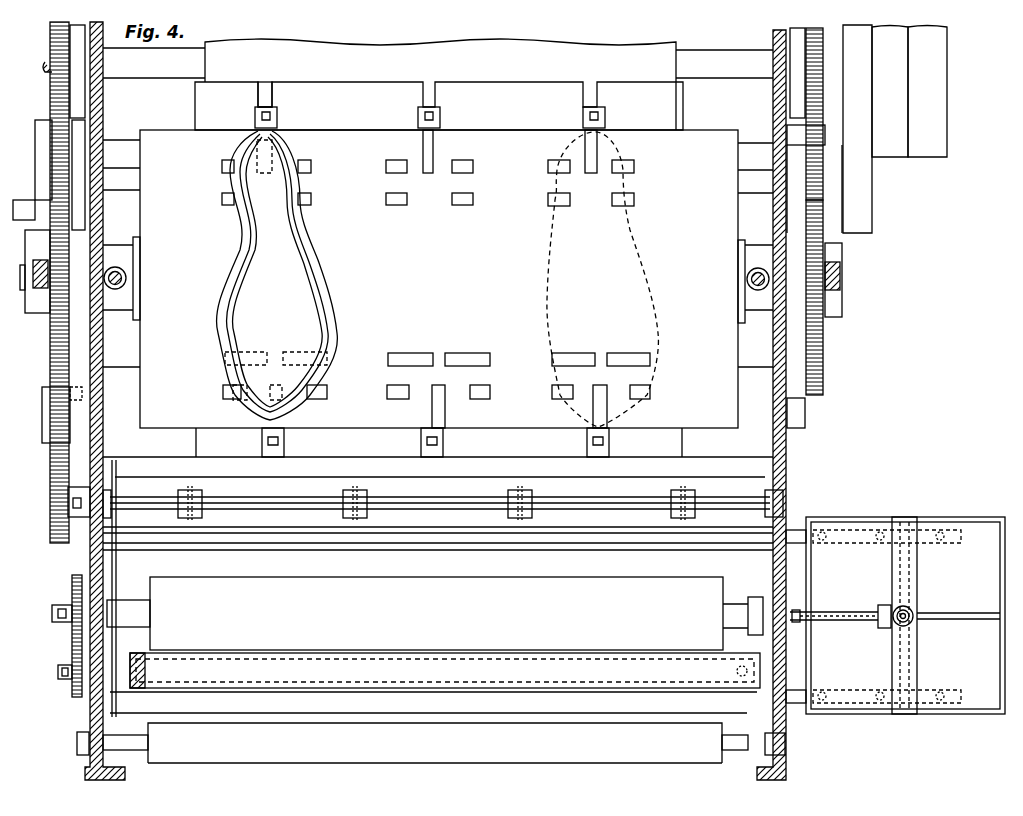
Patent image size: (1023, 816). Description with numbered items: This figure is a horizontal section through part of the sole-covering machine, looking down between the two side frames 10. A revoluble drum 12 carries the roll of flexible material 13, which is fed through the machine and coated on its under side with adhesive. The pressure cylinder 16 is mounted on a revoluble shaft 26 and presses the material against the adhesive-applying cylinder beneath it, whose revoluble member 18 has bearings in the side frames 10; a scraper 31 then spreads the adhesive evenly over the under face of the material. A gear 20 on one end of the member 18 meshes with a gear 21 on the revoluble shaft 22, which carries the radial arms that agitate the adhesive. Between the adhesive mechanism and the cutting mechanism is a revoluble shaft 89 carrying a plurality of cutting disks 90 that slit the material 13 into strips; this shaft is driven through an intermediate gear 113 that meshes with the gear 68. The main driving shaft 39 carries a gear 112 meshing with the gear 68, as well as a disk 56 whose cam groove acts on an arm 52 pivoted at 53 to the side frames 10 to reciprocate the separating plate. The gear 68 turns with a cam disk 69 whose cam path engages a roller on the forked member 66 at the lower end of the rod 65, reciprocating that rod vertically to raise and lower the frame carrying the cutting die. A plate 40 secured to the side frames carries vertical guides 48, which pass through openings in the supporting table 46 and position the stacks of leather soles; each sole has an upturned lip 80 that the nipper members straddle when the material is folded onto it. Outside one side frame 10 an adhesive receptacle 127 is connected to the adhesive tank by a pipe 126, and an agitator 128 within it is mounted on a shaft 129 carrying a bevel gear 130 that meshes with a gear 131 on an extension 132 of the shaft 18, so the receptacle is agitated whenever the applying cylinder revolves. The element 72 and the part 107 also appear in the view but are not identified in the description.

The side frames 10 is at (103, 110).
The revoluble drum 12 is at (337, 752).
The flexible material 13 is at (262, 663).
The cylinder 16 is at (290, 552).
The revoluble member 18 is at (512, 693).
The gear 20 is at (77, 582).
The gear 21 is at (72, 683).
The revoluble shaft 22 is at (447, 690).
The revoluble shaft 26 is at (135, 600).
The scraper 31 is at (322, 477).
The main driving shaft 39 is at (50, 70).
The plate 40 is at (677, 96).
The supporting table 46 is at (710, 143).
The vertical guides 48 is at (312, 166).
The arm 52 is at (840, 274).
The pivot 53 is at (122, 150).
The disk 56 is at (870, 208).
The rod 65 is at (127, 276).
The forked member 66 is at (120, 300).
The gear 68 is at (60, 288).
The cam disk 69 is at (80, 230).
The arm 72 is at (38, 230).
The upturned lip 80 is at (324, 338).
The revoluble shaft 89 is at (428, 505).
The cutting disks 90 is at (195, 522).
The plate 107 is at (660, 50).
The gear 112 is at (50, 28).
The intermediate gear 113 is at (52, 378).
The pipe 126 is at (810, 600).
The receptacle 127 is at (968, 510).
The agitator 128 is at (898, 520).
The shaft 129 is at (914, 600).
The bevel gear 130 is at (912, 611).
The gear 131 is at (884, 608).
The extension 132 is at (828, 621).